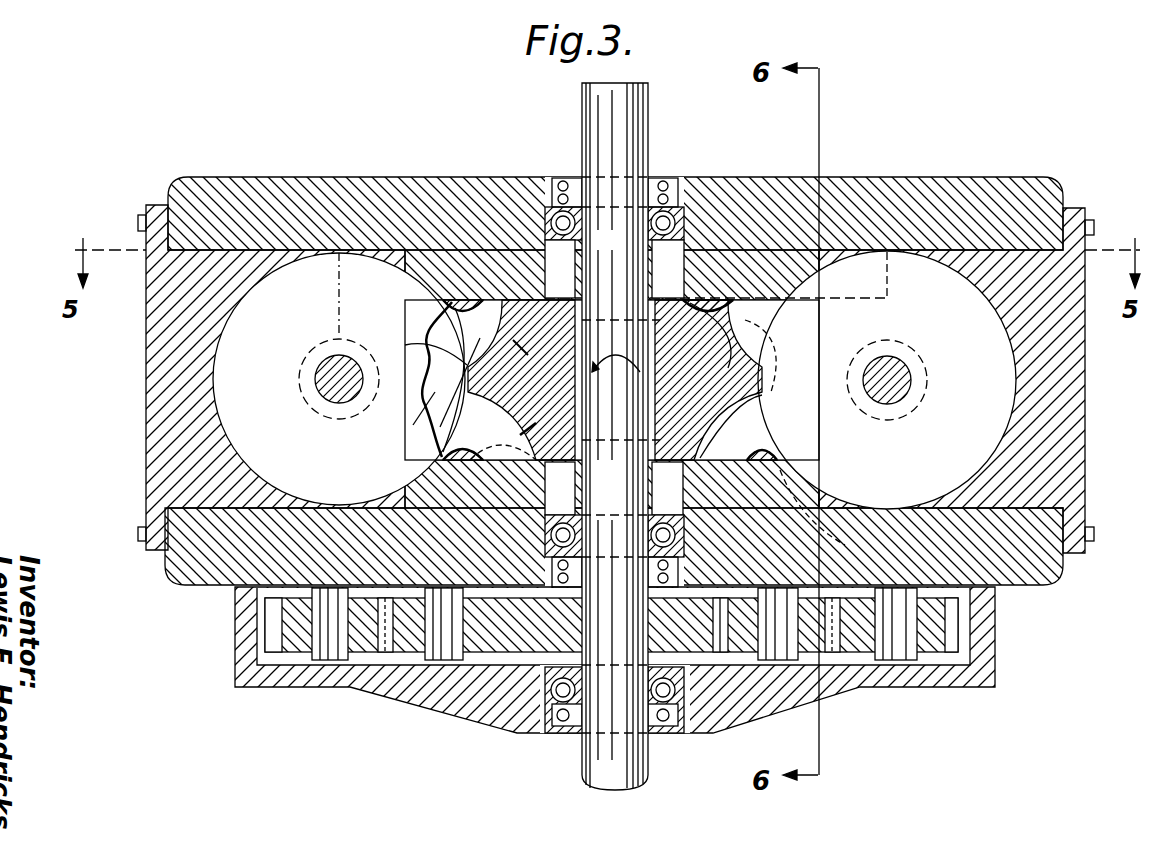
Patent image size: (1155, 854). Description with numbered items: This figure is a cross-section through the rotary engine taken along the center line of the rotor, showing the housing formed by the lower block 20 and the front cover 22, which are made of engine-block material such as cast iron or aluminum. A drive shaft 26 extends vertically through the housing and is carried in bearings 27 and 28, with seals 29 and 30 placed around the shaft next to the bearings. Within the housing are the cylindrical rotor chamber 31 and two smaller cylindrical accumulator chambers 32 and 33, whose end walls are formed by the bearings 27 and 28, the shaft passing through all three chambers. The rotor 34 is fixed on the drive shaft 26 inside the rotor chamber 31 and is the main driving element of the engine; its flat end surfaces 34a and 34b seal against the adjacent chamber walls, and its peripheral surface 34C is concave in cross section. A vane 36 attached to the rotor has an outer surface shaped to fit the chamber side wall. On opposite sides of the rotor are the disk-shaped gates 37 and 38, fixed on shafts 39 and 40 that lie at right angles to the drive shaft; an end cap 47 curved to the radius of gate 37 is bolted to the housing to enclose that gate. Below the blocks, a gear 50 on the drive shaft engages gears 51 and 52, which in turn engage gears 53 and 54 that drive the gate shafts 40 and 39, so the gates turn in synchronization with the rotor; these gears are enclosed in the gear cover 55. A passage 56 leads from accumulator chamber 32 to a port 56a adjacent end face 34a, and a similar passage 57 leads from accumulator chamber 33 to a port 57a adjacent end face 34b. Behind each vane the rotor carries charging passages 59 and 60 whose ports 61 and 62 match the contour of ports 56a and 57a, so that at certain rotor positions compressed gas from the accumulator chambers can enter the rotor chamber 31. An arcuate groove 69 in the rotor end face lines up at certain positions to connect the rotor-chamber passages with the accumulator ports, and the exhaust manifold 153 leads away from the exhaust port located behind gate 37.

The lower block 20 is at (205, 560).
The front cover 22 is at (940, 198).
The drive shaft 26 is at (648, 770).
The bearing 27 is at (676, 222).
The bearing 28 is at (674, 546).
The seal 29 is at (680, 196).
The seal 30 is at (680, 572).
The cylindrical rotor chamber 31 is at (405, 425).
The accumulator chamber 32 is at (684, 255).
The accumulator chamber 33 is at (668, 500).
The rotor 34 is at (735, 300).
The flat end surface 34a is at (758, 300).
The flat end surface 34b is at (756, 486).
The peripheral surface 34C is at (774, 374).
The vane 36 is at (435, 360).
The gate 37 is at (1000, 332).
The gate 38 is at (222, 353).
The shaft 39 is at (900, 386).
The shaft 40 is at (339, 375).
The end cap 47 is at (1040, 400).
The gear 50 is at (545, 628).
The gear 51 is at (420, 630).
The gear 52 is at (774, 643).
The gear 53 is at (300, 625).
The gear 54 is at (960, 630).
The gear cover 55 is at (936, 680).
The passage 56 is at (500, 290).
The port 56a is at (525, 322).
The passage 57 is at (520, 478).
The port 57a is at (490, 478).
The charging passage 59 is at (722, 362).
The charging passage 60 is at (536, 375).
The port 61 is at (706, 332).
The port 62 is at (521, 380).
The arcuate groove 69 is at (560, 377).
The exhaust manifold 153 is at (838, 507).